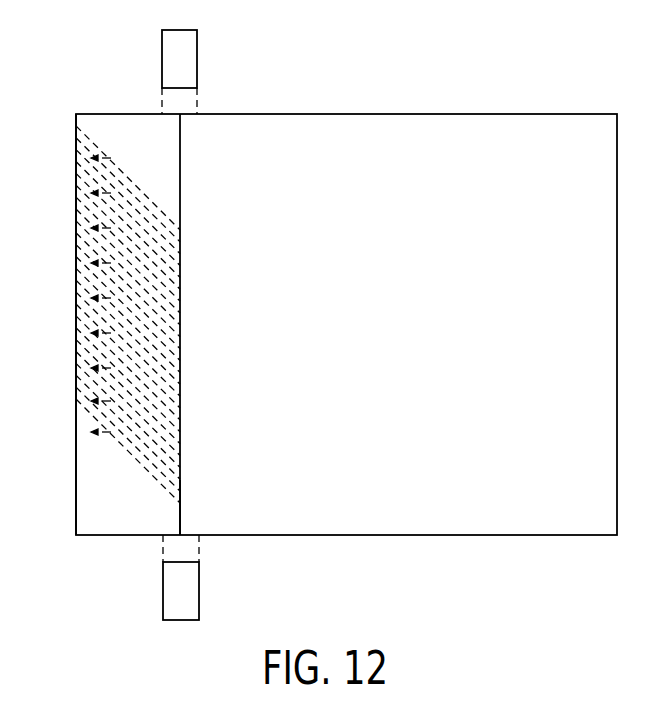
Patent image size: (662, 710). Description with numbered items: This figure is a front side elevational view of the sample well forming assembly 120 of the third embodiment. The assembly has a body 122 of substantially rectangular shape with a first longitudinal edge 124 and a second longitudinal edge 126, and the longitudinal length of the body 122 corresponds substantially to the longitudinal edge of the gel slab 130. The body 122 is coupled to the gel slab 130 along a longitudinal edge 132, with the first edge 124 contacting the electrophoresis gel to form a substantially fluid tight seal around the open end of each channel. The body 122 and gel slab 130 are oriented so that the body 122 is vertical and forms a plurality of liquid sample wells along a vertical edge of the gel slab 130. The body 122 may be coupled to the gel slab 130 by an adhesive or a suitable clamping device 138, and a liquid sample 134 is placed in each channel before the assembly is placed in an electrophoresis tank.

The sample well forming assembly 120 is at (372, 72).
The body 122 is at (158, 122).
The first longitudinal edge 124 is at (180, 522).
The second longitudinal edge 126 is at (76, 498).
The gel slab 130 is at (478, 130).
The longitudinal edge 132 is at (180, 176).
The liquid sample 134 is at (105, 156).
The clamping device 138 is at (198, 48).